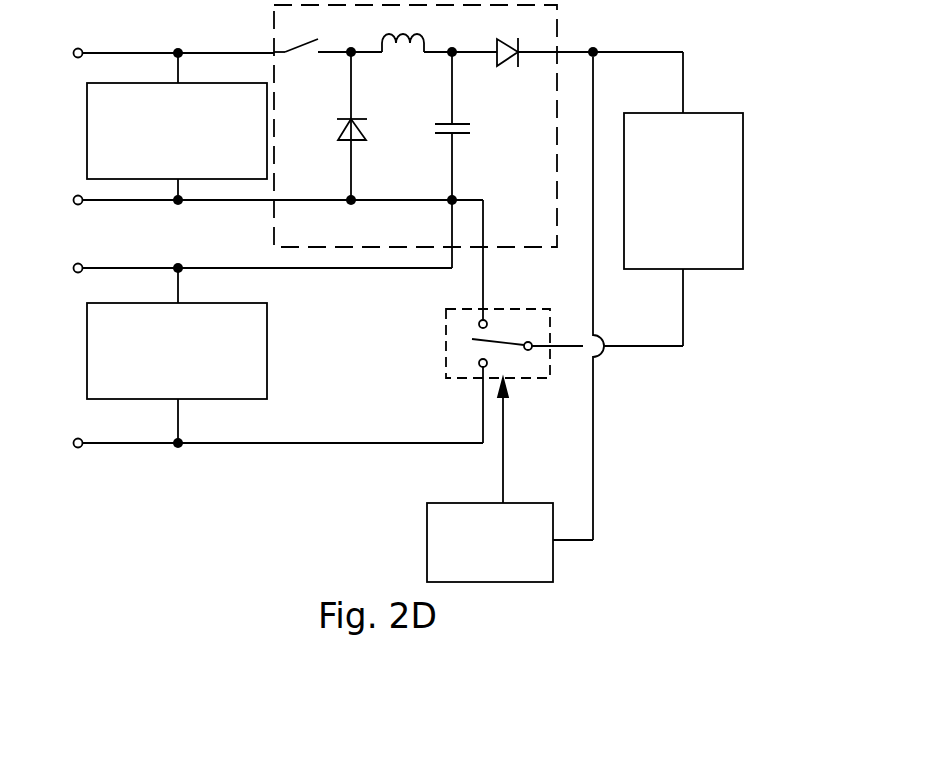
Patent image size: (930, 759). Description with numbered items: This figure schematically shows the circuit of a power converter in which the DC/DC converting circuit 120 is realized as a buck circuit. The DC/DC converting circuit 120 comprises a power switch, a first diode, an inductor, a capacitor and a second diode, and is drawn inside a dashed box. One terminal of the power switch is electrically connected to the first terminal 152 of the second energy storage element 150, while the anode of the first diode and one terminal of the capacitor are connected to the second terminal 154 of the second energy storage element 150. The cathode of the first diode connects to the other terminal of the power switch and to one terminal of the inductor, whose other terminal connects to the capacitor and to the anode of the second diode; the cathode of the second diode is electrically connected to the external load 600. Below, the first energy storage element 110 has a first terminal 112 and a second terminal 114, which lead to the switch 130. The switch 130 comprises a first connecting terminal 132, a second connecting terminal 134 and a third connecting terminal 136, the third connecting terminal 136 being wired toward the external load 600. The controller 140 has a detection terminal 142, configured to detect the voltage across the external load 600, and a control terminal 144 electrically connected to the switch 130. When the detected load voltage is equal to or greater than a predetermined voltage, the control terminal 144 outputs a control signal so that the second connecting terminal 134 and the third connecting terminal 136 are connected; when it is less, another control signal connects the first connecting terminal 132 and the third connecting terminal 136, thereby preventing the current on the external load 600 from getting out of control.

The first energy storage element 110 is at (268, 347).
The first terminal 112 is at (176, 303).
The second terminal 114 is at (175, 400).
The DC/DC converting circuit 120 is at (557, 5).
The switch 130 is at (507, 309).
The first connecting terminal 132 is at (479, 323).
The second connecting terminal 134 is at (479, 363).
The third connecting terminal 136 is at (530, 350).
The controller 140 is at (427, 540).
The detection terminal 142 is at (556, 545).
The control terminal 144 is at (503, 503).
The second energy storage element 150 is at (195, 83).
The first terminal 152 is at (177, 82).
The second terminal 154 is at (172, 180).
The external load 600 is at (698, 113).